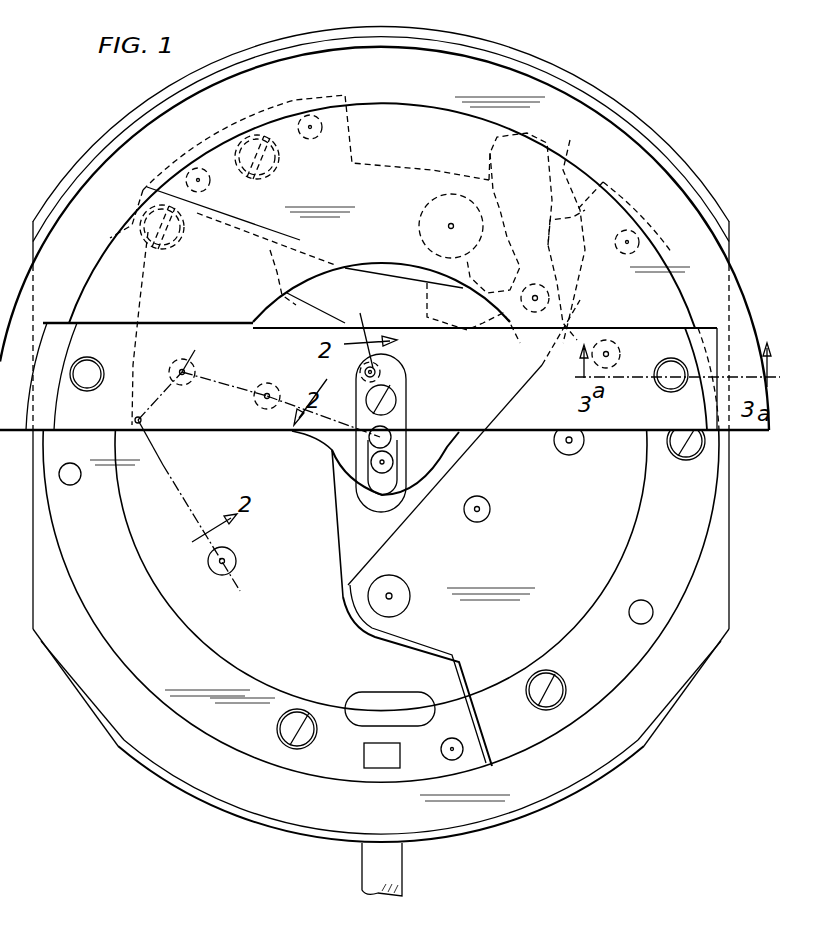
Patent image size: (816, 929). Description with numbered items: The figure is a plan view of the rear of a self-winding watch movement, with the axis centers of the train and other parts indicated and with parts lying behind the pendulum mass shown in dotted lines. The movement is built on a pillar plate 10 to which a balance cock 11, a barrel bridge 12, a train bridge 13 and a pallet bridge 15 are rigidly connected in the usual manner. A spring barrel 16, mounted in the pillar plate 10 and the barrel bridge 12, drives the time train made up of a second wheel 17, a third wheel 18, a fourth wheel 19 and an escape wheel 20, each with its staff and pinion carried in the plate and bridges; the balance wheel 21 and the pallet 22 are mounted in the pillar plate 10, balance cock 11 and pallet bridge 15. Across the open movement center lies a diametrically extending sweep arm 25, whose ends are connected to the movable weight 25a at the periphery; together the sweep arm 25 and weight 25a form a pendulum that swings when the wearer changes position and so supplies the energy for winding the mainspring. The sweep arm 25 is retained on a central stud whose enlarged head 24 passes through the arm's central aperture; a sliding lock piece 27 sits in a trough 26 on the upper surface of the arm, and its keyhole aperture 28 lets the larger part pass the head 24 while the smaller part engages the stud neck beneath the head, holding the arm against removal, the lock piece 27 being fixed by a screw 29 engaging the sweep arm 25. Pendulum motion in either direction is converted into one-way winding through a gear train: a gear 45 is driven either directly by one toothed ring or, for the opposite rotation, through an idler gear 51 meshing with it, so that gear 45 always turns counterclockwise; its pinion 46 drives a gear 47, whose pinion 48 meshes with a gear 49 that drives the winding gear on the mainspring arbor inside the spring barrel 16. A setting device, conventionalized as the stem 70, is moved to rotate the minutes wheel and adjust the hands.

The pillar plate 10 is at (667, 692).
The balance cock 11 is at (433, 178).
The barrel bridge 12 is at (187, 696).
The train bridge 13 is at (641, 632).
The pallet bridge 15 is at (572, 229).
The spring barrel 16 is at (225, 561).
The second wheel 17 is at (394, 586).
The third wheel 18 is at (485, 507).
The fourth wheel 19 is at (571, 445).
The escape wheel 20 is at (606, 354).
The balance wheel 21 is at (451, 226).
The pallet 22 is at (535, 298).
The enlarged head 24 is at (392, 434).
The sweep arm 25 is at (512, 412).
The movable weight 25a is at (657, 173).
The trough 26 is at (404, 369).
The sliding lock piece 27 is at (335, 440).
The keyhole aperture 28 is at (374, 484).
The screw 29 is at (395, 399).
The gear 45 is at (272, 348).
The pinion 46 is at (269, 383).
The gear 47 is at (204, 349).
The pinion 48 is at (197, 365).
The gear 49 is at (141, 420).
The idler gear 51 is at (365, 371).
The stem 70 is at (382, 864).